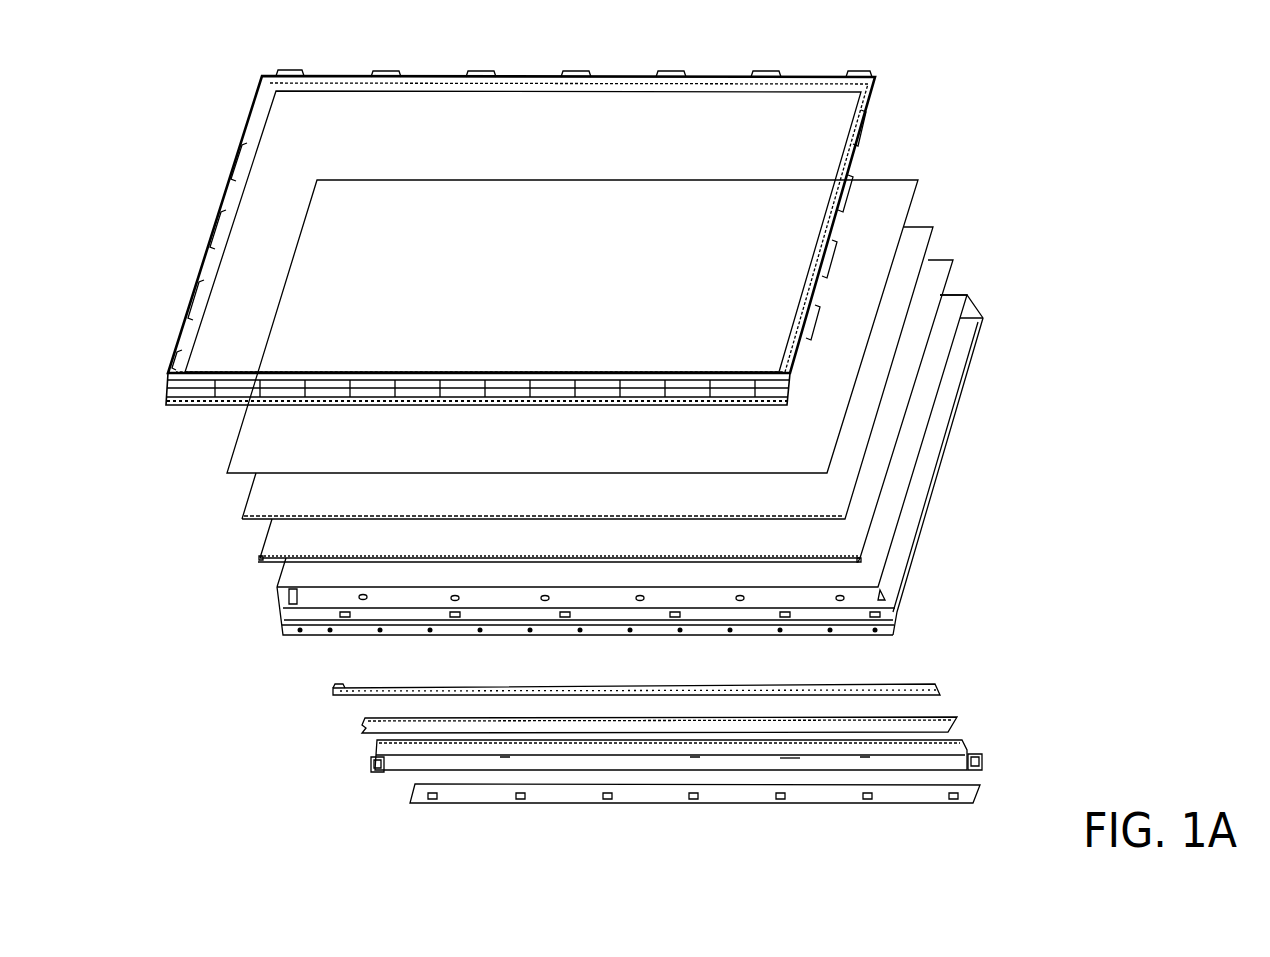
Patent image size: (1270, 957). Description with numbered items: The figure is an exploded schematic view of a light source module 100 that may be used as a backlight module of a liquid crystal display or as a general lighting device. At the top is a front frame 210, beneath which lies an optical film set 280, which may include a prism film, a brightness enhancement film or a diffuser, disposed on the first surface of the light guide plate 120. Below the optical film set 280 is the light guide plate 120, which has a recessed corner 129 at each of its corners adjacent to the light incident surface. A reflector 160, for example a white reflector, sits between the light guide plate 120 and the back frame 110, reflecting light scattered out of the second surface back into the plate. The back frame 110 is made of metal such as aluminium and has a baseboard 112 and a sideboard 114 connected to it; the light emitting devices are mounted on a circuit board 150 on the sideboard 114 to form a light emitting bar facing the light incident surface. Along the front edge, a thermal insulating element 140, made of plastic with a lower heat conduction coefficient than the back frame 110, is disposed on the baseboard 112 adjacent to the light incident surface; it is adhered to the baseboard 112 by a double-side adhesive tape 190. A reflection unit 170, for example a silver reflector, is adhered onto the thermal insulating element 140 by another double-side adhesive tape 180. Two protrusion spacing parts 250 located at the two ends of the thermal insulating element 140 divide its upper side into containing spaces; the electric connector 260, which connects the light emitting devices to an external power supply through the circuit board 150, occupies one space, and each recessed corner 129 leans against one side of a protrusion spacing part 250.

The light source module 100 is at (1224, 788).
The back frame 110 is at (983, 326).
The baseboard 112 is at (883, 598).
The sideboard 114 is at (857, 634).
The light guide plate 120 is at (918, 238).
The recessed corner 129 is at (258, 562).
The thermal insulating element 140 is at (798, 763).
The circuit board 150 is at (332, 692).
The reflector 160 is at (940, 272).
The reflection unit 170 is at (957, 722).
The double-side adhesive tape 180 is at (960, 742).
The double-side adhesive tape 190 is at (890, 793).
The front frame 210 is at (262, 94).
The protrusion spacing part 250 is at (373, 762).
The electric connector 260 is at (338, 688).
The optical film set 280 is at (898, 193).